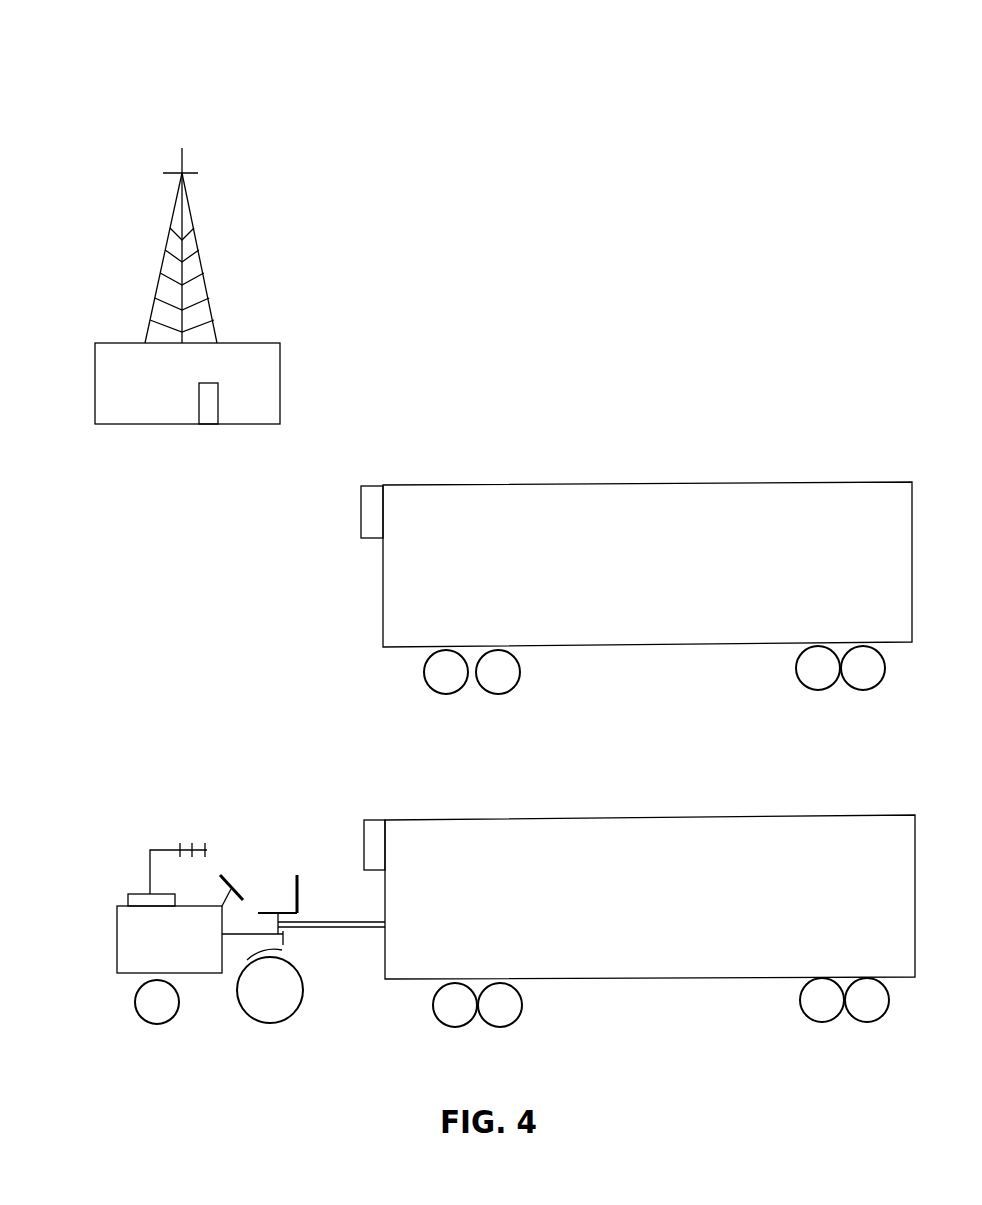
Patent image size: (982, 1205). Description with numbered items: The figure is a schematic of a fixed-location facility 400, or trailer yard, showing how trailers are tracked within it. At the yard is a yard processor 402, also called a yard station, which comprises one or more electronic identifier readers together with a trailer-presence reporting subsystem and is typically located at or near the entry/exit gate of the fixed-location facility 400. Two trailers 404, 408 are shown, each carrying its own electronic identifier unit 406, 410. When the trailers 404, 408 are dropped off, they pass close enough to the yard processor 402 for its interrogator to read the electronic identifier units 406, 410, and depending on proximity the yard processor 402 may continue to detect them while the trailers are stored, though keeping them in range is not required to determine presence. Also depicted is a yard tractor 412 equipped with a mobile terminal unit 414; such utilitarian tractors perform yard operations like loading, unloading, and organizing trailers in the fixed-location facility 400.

The fixed-location facility 400 is at (483, 103).
The yard processor 402 is at (237, 343).
The trailer 404 is at (852, 447).
The electronic identifier unit 406 is at (487, 447).
The trailer 408 is at (850, 780).
The electronic identifier unit 410 is at (484, 768).
The yard tractor 412 is at (107, 732).
The mobile terminal unit 414 is at (133, 894).